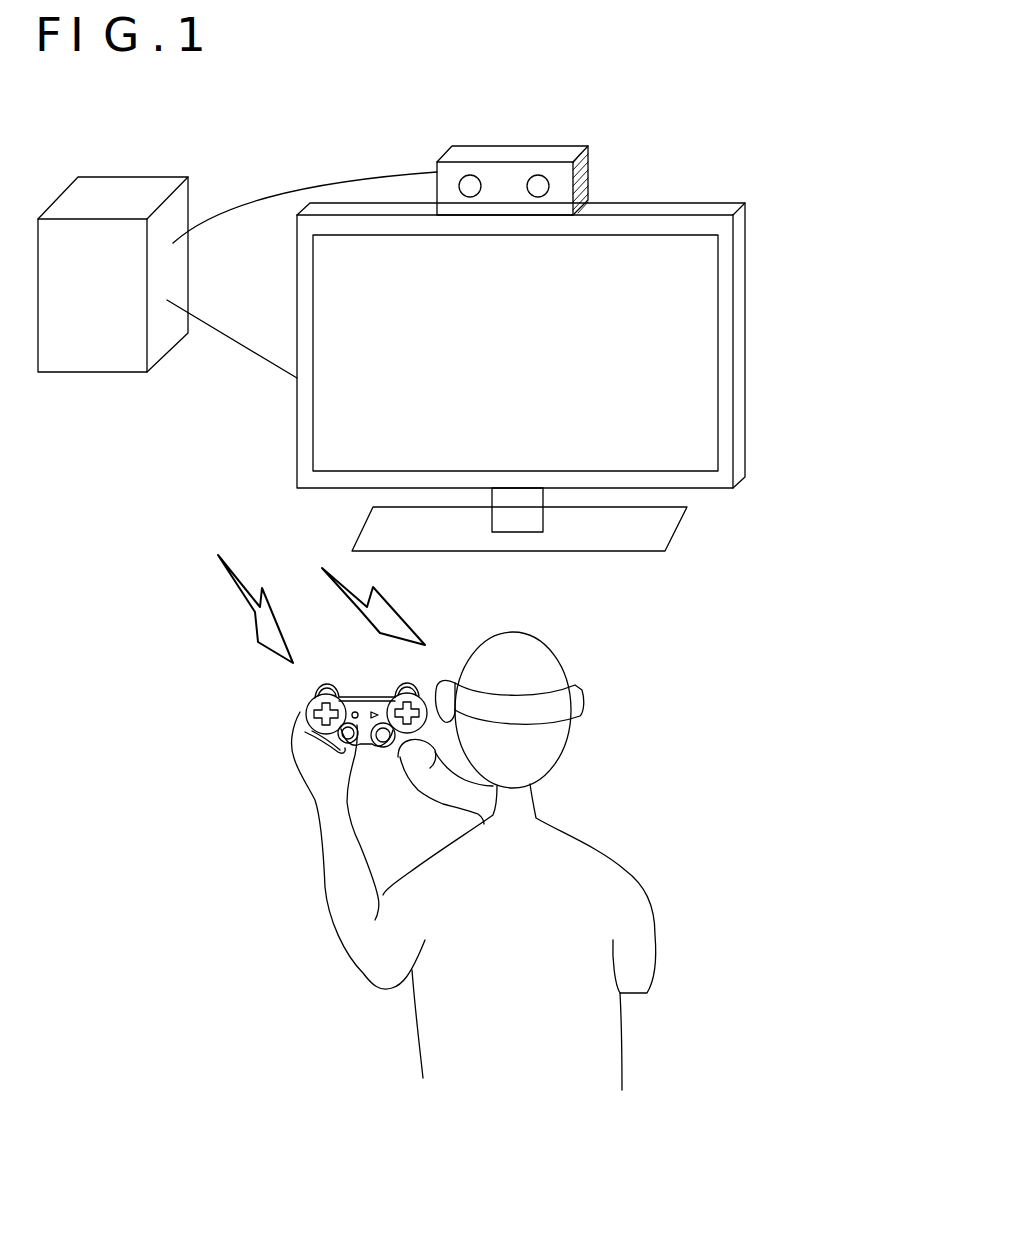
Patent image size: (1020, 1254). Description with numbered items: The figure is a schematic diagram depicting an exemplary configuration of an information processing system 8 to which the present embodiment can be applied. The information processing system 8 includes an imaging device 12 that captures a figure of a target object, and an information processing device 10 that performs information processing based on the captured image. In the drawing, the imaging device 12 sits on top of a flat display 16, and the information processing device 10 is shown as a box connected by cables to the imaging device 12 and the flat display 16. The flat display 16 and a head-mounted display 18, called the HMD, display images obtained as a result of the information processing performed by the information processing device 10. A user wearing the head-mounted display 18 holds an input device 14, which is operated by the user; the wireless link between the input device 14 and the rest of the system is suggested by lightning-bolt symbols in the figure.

The information processing system 8 is at (890, 471).
The information processing device 10 is at (137, 177).
The imaging device 12 is at (517, 146).
The input device 14 is at (300, 714).
The flat display 16 is at (661, 201).
The head-mounted display 18 is at (583, 698).